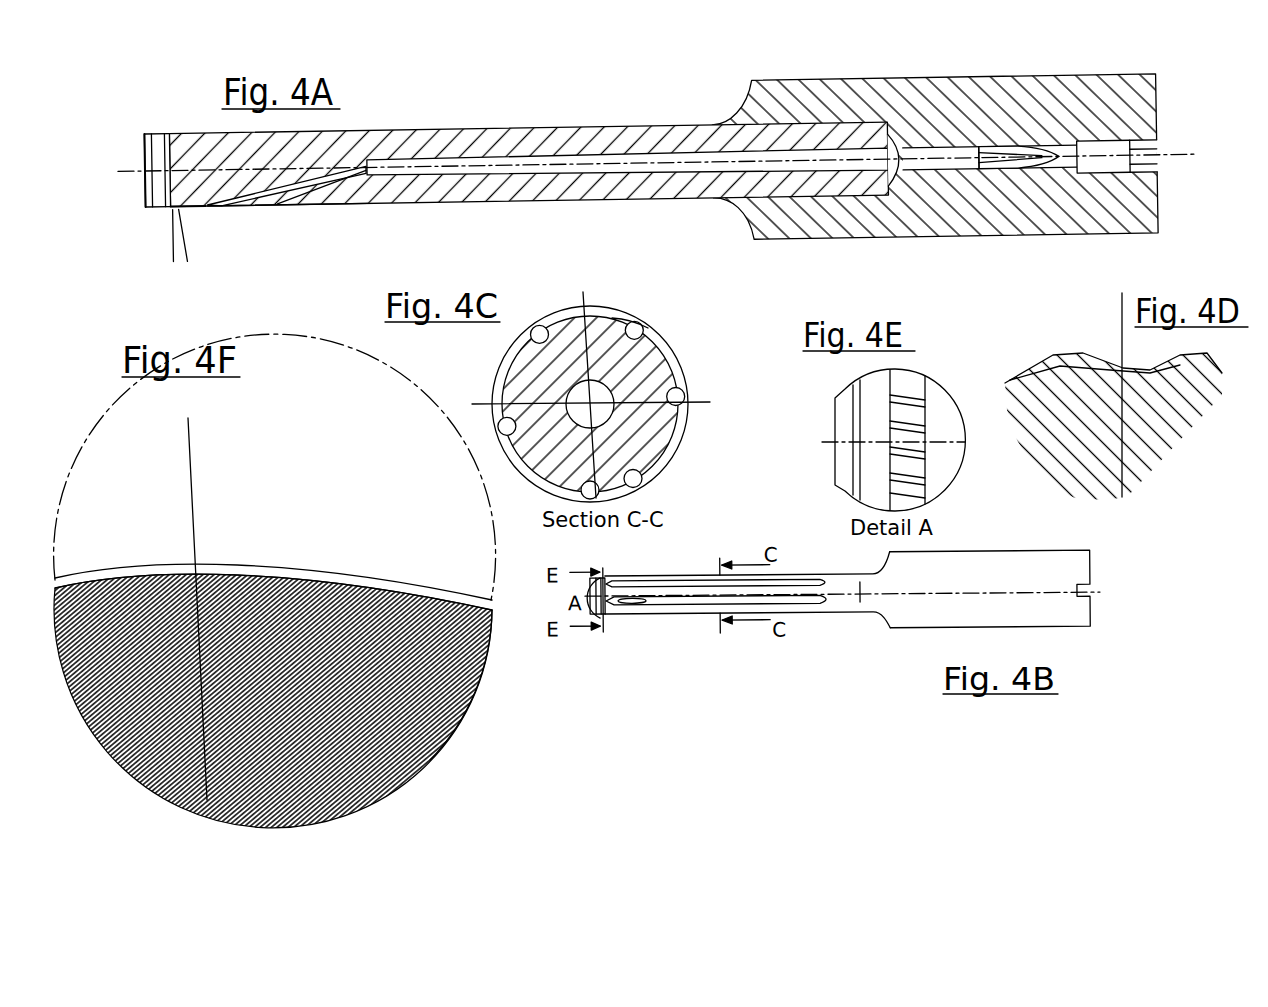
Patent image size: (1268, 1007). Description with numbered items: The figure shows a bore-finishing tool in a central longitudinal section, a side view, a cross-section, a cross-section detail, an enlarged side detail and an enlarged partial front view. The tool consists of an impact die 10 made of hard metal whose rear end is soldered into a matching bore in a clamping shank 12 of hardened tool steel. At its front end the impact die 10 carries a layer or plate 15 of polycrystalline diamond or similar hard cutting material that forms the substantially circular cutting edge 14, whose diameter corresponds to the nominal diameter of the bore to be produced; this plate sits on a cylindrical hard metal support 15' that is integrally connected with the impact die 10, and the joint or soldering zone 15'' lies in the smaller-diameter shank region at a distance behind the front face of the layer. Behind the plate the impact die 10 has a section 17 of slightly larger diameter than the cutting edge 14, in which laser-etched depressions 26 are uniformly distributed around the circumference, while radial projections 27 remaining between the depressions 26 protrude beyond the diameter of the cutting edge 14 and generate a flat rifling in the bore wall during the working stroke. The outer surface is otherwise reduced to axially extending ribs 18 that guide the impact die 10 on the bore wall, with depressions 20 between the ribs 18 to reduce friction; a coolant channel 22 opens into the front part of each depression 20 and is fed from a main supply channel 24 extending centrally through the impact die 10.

In FIG. 4A, the impact die 10 is at (479, 126).
In FIG. 4B, the impact die 10 is at (840, 605).
In FIG. 4A, the clamping shank 12 is at (952, 231).
In FIG. 4B, the clamping shank 12 is at (1020, 566).
In FIG. 4A, the cutting edge 14 is at (143, 133).
In FIG. 4F, the cutting edge 14 is at (458, 590).
In FIG. 4A, the layer or plate 15 is at (125, 201).
In FIG. 4F, the layer or plate 15 is at (480, 685).
In FIG. 4A, the hard metal support 15' is at (160, 142).
In FIG. 4A, the soldering zone 15'' is at (181, 149).
In FIG. 4A, the section 17 is at (181, 211).
In FIG. 4B, the ribs 18 is at (657, 592).
In FIG. 4C, the ribs 18 is at (589, 318).
In FIG. 4A, the depressions 20 is at (341, 205).
In FIG. 4B, the depressions 20 is at (692, 603).
In FIG. 4C, the depressions 20 is at (636, 322).
In FIG. 4A, the coolant channel 22 is at (292, 201).
In FIG. 4B, the coolant channel 22 is at (637, 603).
In FIG. 4C, the coolant channel 22 is at (645, 322).
In FIG. 4A, the main supply channel 24 is at (567, 161).
In FIG. 4D, the depressions 26 is at (1022, 374).
In FIG. 4E, the depressions 26 is at (913, 476).
In FIG. 4D, the radial projections 27 is at (1077, 357).
In FIG. 4E, the radial projections 27 is at (905, 398).
In FIG. 4F, the radial projections 27 is at (360, 573).